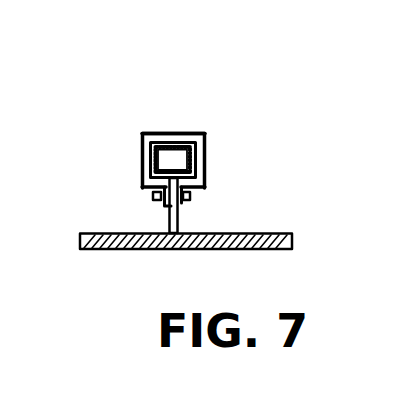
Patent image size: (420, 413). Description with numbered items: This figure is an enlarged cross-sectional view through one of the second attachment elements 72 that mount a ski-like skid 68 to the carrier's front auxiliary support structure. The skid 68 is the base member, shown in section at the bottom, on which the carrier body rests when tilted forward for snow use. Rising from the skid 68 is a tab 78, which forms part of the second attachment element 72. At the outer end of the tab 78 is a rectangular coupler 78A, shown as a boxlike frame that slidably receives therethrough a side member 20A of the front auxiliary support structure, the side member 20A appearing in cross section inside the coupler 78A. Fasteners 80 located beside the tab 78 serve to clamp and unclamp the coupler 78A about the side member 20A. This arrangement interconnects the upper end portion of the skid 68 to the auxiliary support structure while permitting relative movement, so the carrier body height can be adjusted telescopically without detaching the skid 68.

The second attachment element 72 is at (126, 126).
The rectangular coupler 78A is at (170, 132).
The side member 20A is at (197, 150).
The fastener 80 is at (153, 197).
The tab 78 is at (183, 222).
The skid 68 is at (105, 249).